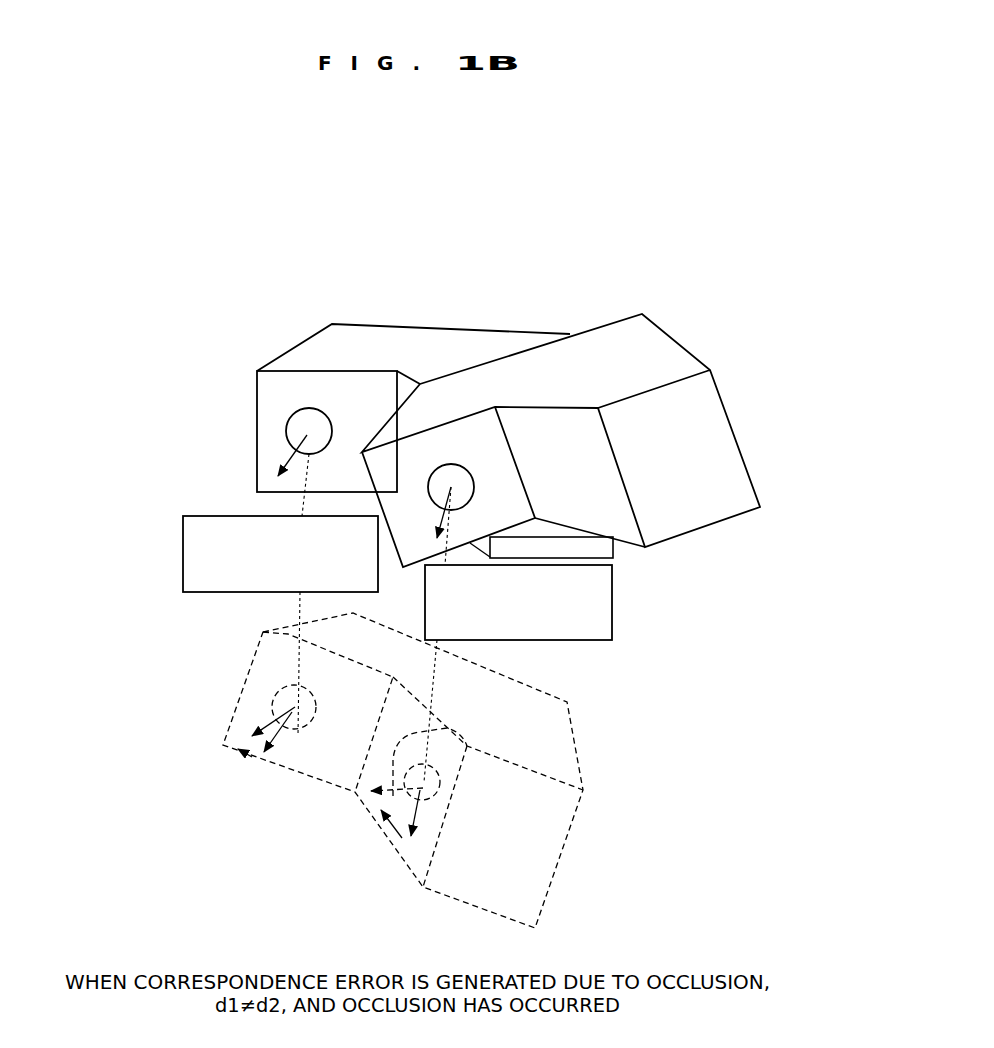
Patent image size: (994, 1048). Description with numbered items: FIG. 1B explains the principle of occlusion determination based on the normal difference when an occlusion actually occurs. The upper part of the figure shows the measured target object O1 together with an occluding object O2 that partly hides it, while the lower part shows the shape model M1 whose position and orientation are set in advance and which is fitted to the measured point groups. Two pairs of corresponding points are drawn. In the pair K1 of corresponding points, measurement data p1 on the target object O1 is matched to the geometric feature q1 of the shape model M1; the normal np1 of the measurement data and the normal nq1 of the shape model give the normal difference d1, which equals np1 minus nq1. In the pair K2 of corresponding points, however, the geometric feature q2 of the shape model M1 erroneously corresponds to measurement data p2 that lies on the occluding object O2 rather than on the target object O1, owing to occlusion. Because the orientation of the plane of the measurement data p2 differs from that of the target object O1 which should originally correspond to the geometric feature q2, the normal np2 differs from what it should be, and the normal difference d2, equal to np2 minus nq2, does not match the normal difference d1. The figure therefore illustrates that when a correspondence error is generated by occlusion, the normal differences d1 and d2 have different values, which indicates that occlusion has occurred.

The target object O1 is at (290, 356).
The occluding object O2 is at (663, 329).
The measurement data p1' p1 is at (309, 431).
The measurement data p2' p2 is at (451, 487).
The geometric feature q1' q1 is at (275, 690).
The geometric feature q2' q2 is at (430, 764).
The pair K1' of corresponding points K1 is at (280, 594).
The pair K2' of erroneous corresponding points K2 is at (518, 634).
The shape model M1 is at (558, 843).
The normal nq1' nq1 is at (295, 454).
The normal nq2' nq2 is at (430, 728).
The normal np1' np1 is at (288, 736).
The normal np2' np2 is at (441, 527).
The normal difference d1' d1 is at (170, 784).
The normal difference d2' d2 is at (278, 851).